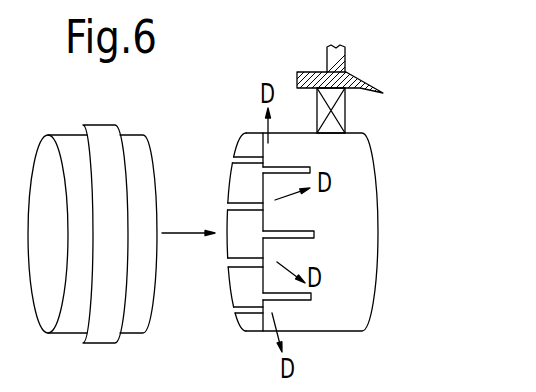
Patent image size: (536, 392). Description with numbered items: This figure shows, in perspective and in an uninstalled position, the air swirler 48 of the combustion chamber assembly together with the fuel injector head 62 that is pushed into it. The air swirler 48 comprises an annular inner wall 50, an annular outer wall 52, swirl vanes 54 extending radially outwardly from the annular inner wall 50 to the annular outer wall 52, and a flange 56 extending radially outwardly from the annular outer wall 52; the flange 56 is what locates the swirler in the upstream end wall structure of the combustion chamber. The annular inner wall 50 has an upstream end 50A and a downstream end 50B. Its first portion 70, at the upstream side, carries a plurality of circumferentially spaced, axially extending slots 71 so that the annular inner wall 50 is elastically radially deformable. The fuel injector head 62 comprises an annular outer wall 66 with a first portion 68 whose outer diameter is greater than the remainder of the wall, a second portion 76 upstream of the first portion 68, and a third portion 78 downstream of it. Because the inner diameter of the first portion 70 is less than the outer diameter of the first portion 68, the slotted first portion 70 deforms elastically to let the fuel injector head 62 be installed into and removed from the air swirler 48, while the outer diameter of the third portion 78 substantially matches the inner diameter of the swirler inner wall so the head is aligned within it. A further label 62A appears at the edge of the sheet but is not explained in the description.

The air swirler 48 is at (372, 86).
The annular inner wall 50 is at (358, 189).
The upstream end 50A is at (257, 323).
The downstream end 50B is at (357, 323).
The annular outer wall 52 is at (373, 83).
The swirl vanes 54 is at (346, 112).
The flange 56 is at (324, 61).
The fuel injector head 62 is at (67, 321).
The ring portion end 62A is at (482, 384).
The annular outer wall 66 is at (132, 322).
The first portion 68 is at (98, 335).
The first portion 70 is at (293, 320).
The axially extending slots 71 is at (297, 231).
The second portion 76 is at (70, 145).
The third portion 78 is at (138, 305).